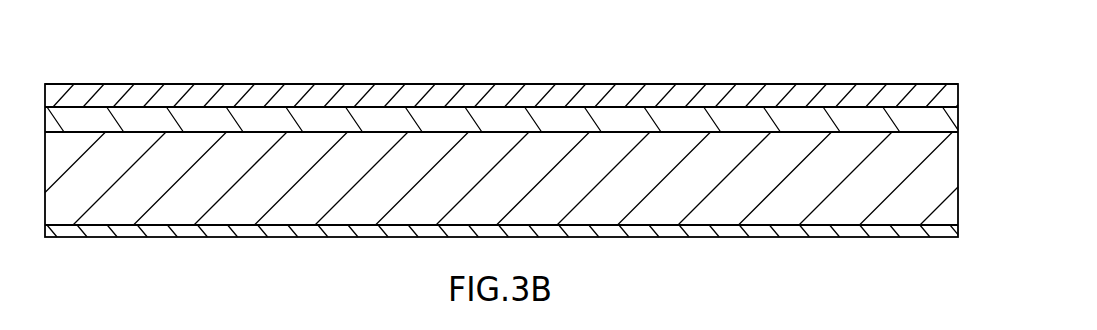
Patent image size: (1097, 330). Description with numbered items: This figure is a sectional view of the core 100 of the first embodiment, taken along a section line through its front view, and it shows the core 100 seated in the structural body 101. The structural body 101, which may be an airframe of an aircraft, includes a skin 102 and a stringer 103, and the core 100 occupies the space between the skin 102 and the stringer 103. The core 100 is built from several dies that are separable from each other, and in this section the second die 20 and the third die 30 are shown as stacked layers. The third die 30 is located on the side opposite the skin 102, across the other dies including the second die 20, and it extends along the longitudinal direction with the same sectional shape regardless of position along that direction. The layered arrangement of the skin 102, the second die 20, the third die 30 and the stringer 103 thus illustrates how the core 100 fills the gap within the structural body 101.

The core 100 is at (715, 104).
The structural body 101 is at (581, 82).
The skin 102 is at (199, 93).
The stringer 103 is at (205, 232).
The second die 20 is at (325, 118).
The third die 30 is at (350, 203).